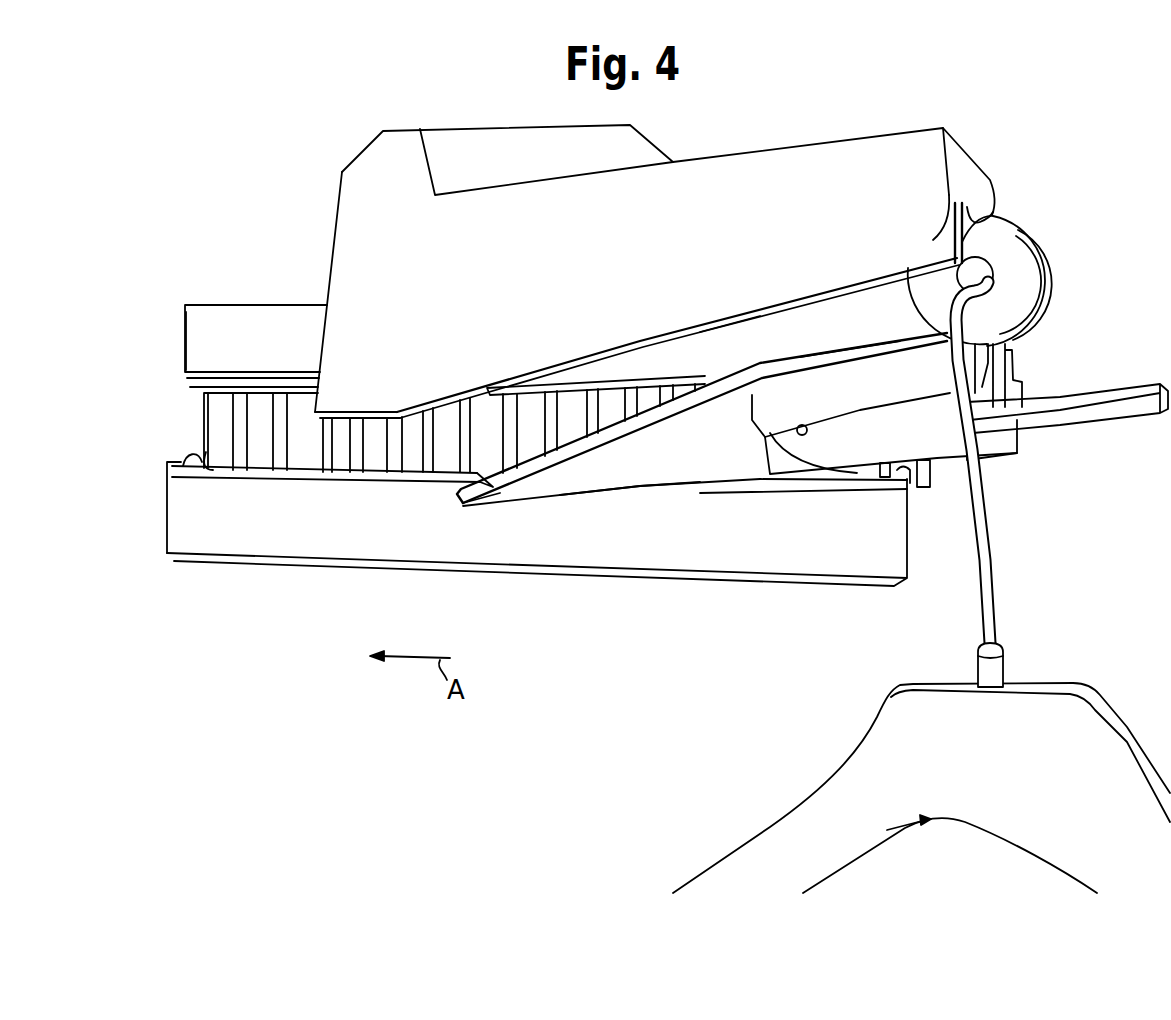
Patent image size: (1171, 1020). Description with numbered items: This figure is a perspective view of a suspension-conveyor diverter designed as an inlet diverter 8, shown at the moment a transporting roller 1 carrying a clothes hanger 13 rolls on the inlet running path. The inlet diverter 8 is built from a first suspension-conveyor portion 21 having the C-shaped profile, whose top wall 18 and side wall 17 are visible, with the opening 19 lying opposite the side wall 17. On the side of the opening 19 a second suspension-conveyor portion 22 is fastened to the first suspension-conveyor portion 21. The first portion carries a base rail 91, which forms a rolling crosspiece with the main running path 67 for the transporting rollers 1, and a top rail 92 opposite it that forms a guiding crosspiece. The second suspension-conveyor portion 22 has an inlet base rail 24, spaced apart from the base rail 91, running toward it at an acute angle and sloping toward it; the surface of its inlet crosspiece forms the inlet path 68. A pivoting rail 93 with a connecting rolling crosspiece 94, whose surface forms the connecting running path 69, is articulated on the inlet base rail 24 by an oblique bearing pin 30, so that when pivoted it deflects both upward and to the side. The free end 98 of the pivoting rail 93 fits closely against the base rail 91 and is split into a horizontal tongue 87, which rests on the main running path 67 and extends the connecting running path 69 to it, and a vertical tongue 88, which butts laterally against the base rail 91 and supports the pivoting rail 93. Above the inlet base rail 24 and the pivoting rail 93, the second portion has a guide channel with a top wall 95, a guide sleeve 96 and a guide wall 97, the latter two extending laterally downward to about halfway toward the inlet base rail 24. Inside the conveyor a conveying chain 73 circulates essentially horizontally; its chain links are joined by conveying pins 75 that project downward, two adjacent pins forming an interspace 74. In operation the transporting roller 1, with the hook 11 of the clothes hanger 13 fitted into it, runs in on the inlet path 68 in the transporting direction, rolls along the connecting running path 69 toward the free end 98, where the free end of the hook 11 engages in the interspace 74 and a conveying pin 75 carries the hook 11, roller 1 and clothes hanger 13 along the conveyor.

The transporting roller 1 is at (1040, 267).
The inlet diverter 8 is at (297, 176).
The hook 11 is at (986, 536).
The clothes hanger 13 is at (1073, 690).
The side wall 17 is at (212, 432).
The top wall 18 is at (240, 304).
The opening 19 is at (196, 402).
The first suspension-conveyor portion 21 is at (589, 585).
The second suspension-conveyor portion 22 is at (729, 176).
The inlet base rail 24 is at (862, 405).
The bearing pin 30 is at (800, 436).
The main running path 67 is at (183, 466).
The inlet path 68 is at (875, 345).
The connecting running path 69 is at (755, 372).
The conveying chain 73 is at (341, 462).
The interspace 74 is at (302, 452).
The conveying pins 75 is at (270, 455).
The horizontal tongue 87 is at (495, 460).
The vertical tongue 88 is at (462, 500).
The base rail 91 is at (185, 534).
The top rail 92 is at (300, 322).
The pivoting rail 93 is at (623, 470).
The connecting rolling crosspiece 94 is at (540, 458).
The top wall 95 is at (985, 212).
The guide sleeve 96 is at (950, 200).
The guide wall 97 is at (903, 297).
The free end 98 is at (497, 500).